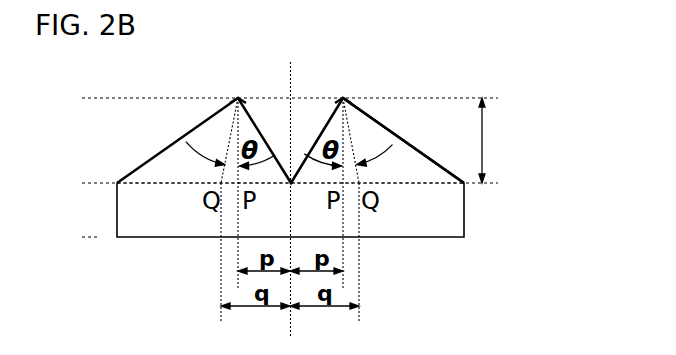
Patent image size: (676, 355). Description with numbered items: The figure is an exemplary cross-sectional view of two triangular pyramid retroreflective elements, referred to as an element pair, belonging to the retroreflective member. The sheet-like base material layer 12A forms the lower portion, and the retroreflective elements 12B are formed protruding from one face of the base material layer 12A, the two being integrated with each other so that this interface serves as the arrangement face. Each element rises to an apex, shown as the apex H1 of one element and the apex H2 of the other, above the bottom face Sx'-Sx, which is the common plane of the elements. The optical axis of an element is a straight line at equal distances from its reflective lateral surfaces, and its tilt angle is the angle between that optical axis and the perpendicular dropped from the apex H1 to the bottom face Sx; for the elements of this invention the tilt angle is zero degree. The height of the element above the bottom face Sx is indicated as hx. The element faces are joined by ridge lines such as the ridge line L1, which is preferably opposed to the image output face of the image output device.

The base material layer 12A is at (101, 183).
The retroreflective elements 12B is at (101, 98).
The ridge line L1 is at (440, 165).
The apex H1 is at (346, 87).
The apex H2 is at (243, 87).
The prism height hx is at (497, 140).
The bottom face Sx is at (290, 183).